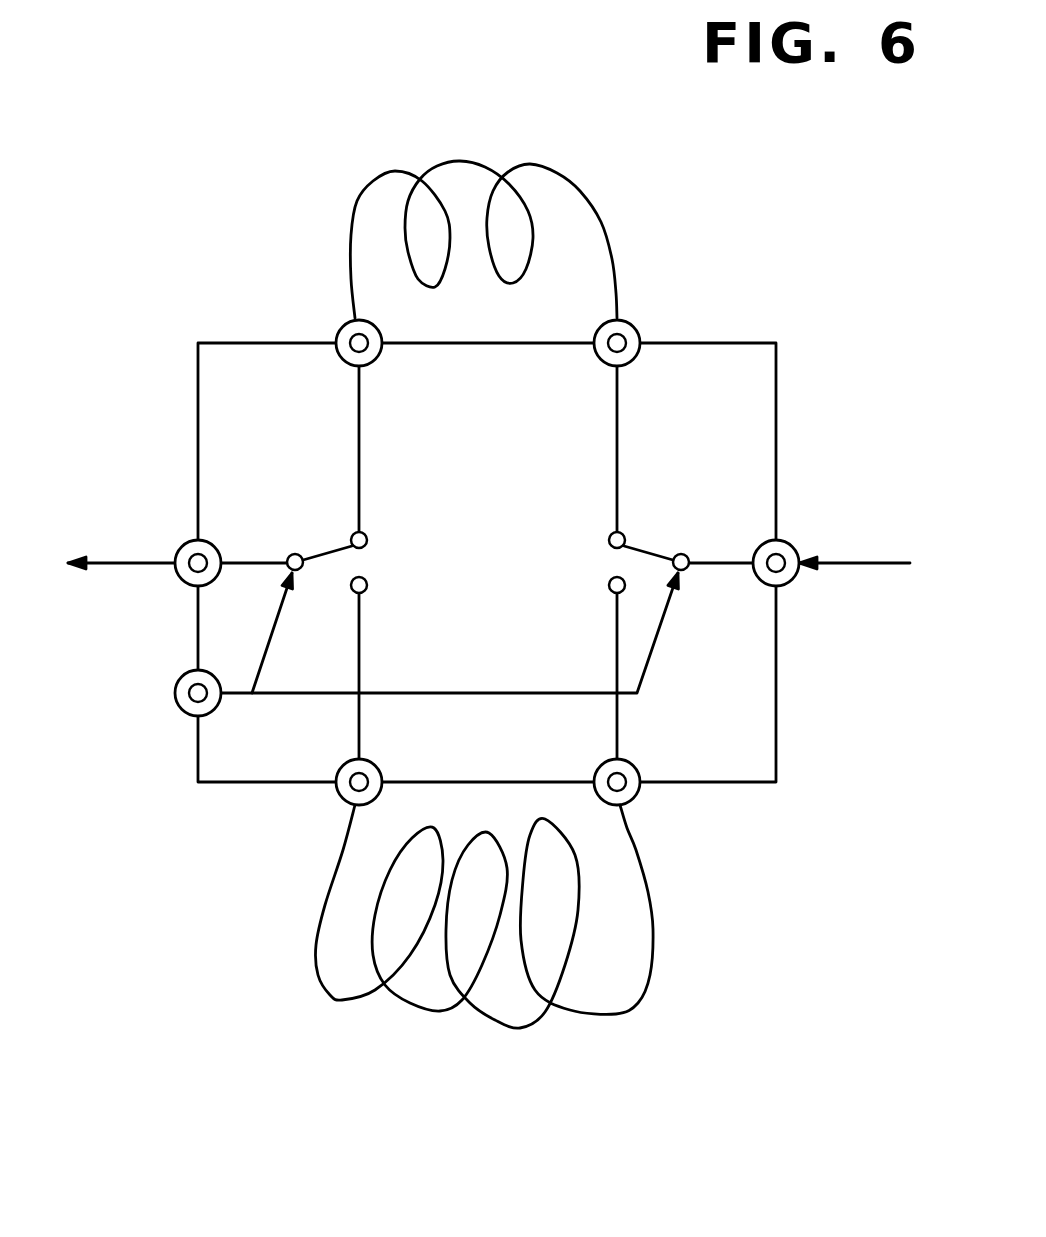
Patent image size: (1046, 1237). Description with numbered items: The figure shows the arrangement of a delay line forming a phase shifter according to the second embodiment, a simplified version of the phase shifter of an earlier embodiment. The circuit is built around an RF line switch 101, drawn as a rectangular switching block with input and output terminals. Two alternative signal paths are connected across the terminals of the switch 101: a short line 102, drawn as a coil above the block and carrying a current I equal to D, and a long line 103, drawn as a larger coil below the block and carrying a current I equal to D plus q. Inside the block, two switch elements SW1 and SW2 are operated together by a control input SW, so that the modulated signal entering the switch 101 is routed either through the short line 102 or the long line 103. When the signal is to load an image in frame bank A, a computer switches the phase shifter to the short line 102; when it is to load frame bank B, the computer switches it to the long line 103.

The RF line switch 101 is at (489, 562).
The short line 102 is at (636, 226).
The long line 103 is at (673, 938).
The first switch SW1 is at (655, 562).
The second switch SW2 is at (318, 562).
The switch control terminal SW is at (173, 693).